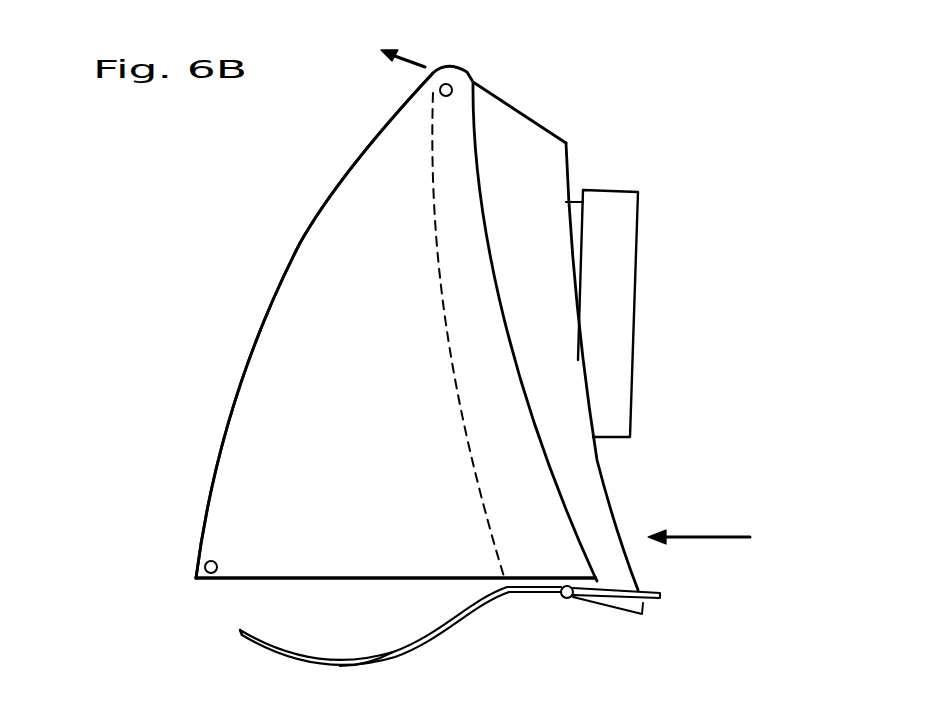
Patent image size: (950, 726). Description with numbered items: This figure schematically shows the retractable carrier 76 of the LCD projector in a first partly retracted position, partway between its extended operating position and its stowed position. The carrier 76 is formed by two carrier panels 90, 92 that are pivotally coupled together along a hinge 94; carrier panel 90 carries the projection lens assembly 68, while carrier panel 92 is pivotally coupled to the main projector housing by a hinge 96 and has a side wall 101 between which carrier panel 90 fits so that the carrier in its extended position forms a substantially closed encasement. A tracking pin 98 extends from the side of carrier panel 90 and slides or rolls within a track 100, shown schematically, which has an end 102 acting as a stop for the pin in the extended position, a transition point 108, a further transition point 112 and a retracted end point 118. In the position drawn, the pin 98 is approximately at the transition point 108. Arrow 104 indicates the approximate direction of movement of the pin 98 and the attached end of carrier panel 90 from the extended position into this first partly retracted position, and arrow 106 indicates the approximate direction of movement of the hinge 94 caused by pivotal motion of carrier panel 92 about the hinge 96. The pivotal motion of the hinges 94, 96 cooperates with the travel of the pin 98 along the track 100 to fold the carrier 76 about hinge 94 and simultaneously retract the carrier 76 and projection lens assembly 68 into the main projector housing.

The projection lens assembly 68 is at (605, 184).
The retractable carrier 76 is at (343, 166).
The carrier panel 90 is at (575, 502).
The carrier panel 92 is at (240, 409).
The hinge 94 is at (451, 83).
The hinge 96 is at (211, 574).
The tracking pin 98 is at (598, 585).
The track 100 is at (437, 637).
The side wall 101 is at (407, 369).
The end of track 102 is at (657, 607).
The arrow 104 is at (713, 533).
The arrow 106 is at (417, 68).
The transition point 108 is at (577, 600).
The transition point 112 is at (390, 652).
The retracted end point 118 is at (240, 630).